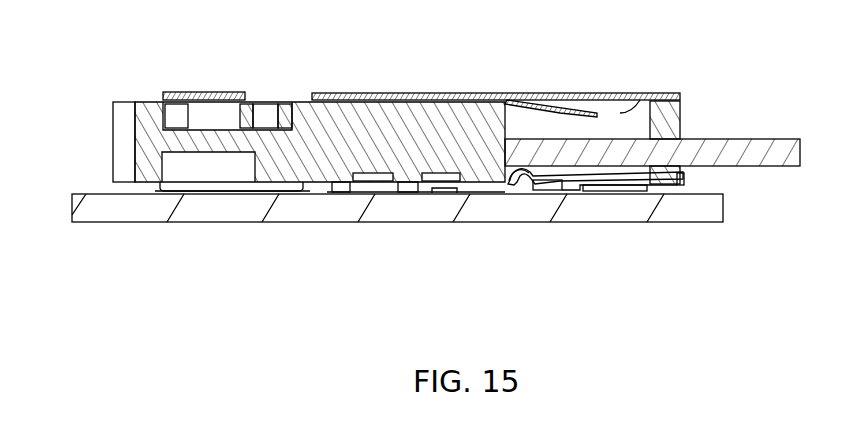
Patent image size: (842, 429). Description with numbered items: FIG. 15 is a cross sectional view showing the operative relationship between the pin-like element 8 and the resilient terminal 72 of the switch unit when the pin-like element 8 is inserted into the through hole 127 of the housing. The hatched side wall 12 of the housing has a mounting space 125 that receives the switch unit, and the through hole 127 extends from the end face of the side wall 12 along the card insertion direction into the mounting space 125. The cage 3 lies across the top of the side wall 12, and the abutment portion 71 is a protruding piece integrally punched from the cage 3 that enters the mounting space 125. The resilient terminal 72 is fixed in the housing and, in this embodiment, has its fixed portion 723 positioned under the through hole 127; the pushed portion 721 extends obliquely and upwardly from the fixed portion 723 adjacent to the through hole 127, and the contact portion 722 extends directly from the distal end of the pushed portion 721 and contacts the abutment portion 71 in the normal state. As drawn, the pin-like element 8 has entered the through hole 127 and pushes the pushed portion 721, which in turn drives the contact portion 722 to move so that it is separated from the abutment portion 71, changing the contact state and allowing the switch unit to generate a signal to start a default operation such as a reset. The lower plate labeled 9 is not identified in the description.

The cage 3 is at (432, 92).
The pin-like element 8 is at (742, 160).
The substrate board 9 is at (685, 210).
The side wall 12 is at (365, 120).
The abutment portion 71 is at (568, 110).
The resilient terminal 72 is at (588, 226).
The mounting space 125 is at (635, 112).
The through hole 127 is at (683, 138).
The pushed portion 721 is at (566, 186).
The contact portion 722 is at (521, 184).
The fixed portion 723 is at (670, 188).